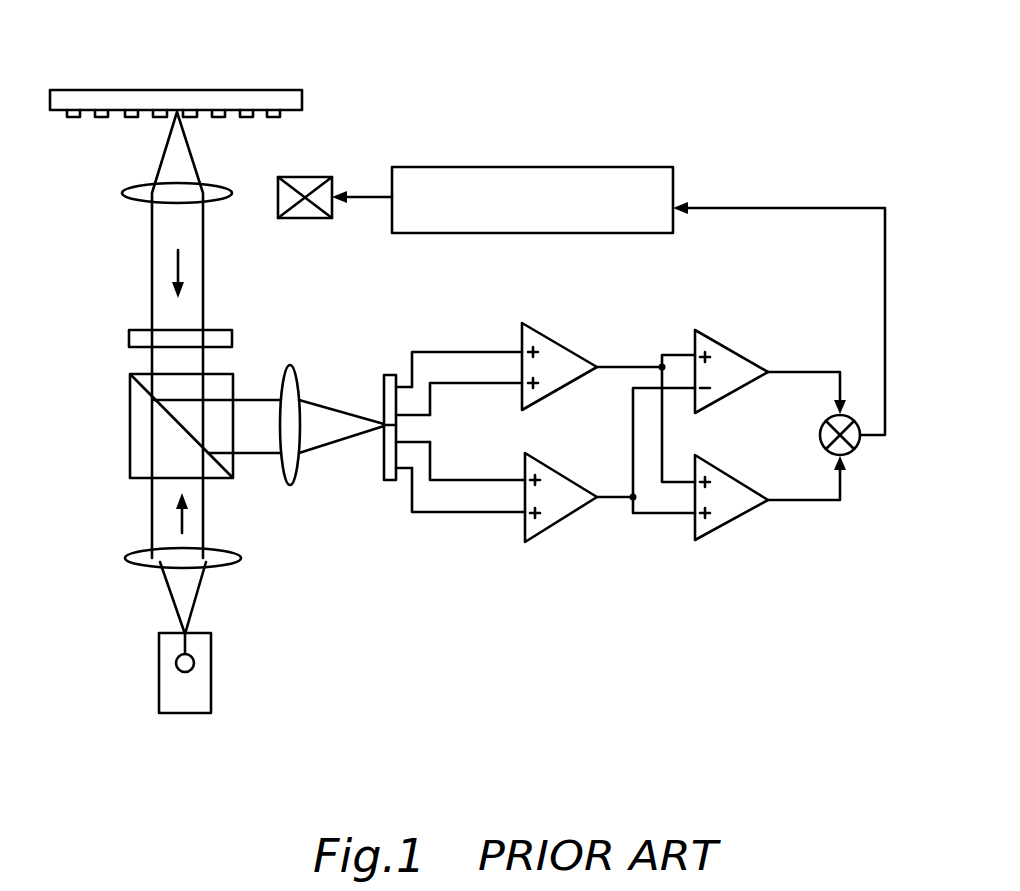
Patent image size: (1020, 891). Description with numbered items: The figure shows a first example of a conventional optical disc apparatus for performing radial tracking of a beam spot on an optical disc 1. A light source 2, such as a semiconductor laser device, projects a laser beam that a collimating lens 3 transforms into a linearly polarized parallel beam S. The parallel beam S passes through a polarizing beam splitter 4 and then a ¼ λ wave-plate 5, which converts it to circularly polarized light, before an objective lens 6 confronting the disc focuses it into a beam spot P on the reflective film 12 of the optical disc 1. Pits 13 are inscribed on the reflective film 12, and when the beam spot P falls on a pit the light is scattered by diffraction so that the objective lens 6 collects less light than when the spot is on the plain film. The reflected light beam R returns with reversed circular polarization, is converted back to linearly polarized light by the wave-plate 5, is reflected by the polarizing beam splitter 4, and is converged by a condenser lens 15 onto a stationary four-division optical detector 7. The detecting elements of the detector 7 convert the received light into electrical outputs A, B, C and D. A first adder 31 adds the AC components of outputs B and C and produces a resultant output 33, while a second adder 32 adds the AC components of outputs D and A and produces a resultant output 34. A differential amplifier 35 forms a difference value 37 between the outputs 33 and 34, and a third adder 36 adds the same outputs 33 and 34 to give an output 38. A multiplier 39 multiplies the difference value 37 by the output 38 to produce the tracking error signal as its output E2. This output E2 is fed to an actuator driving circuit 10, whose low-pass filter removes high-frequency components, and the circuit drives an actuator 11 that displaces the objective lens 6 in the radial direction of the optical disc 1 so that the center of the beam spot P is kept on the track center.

The optical disc 1 is at (215, 92).
The reflective film 12 is at (85, 117).
The pits 13 is at (265, 118).
The beam spot P is at (178, 113).
The objective lens 6 is at (143, 201).
The reflected light beam R is at (173, 275).
The ¼ λ wave-plate 5 is at (232, 342).
The polarizing beam splitter 4 is at (137, 405).
The condenser lens 15 is at (293, 380).
The parallel beam S is at (175, 518).
The collimating lens 3 is at (235, 552).
The light source 2 is at (200, 660).
The 4-division optical detector 7 is at (383, 475).
The output A is at (468, 514).
The output B is at (448, 352).
The output C is at (431, 397).
The output D is at (431, 455).
The first adder 31 is at (553, 338).
The second adder 32 is at (567, 523).
The output of the first adder 33 is at (623, 367).
The output of the second adder 34 is at (613, 503).
The differential amplifier 35 is at (733, 350).
The third adder 36 is at (733, 527).
The difference value 37 is at (813, 372).
The output of the third adder 38 is at (820, 502).
The multiplier 39 is at (820, 438).
The output of the multiplier E2 is at (873, 440).
The actuator driving circuit 10 is at (523, 167).
The actuator 11 is at (300, 218).